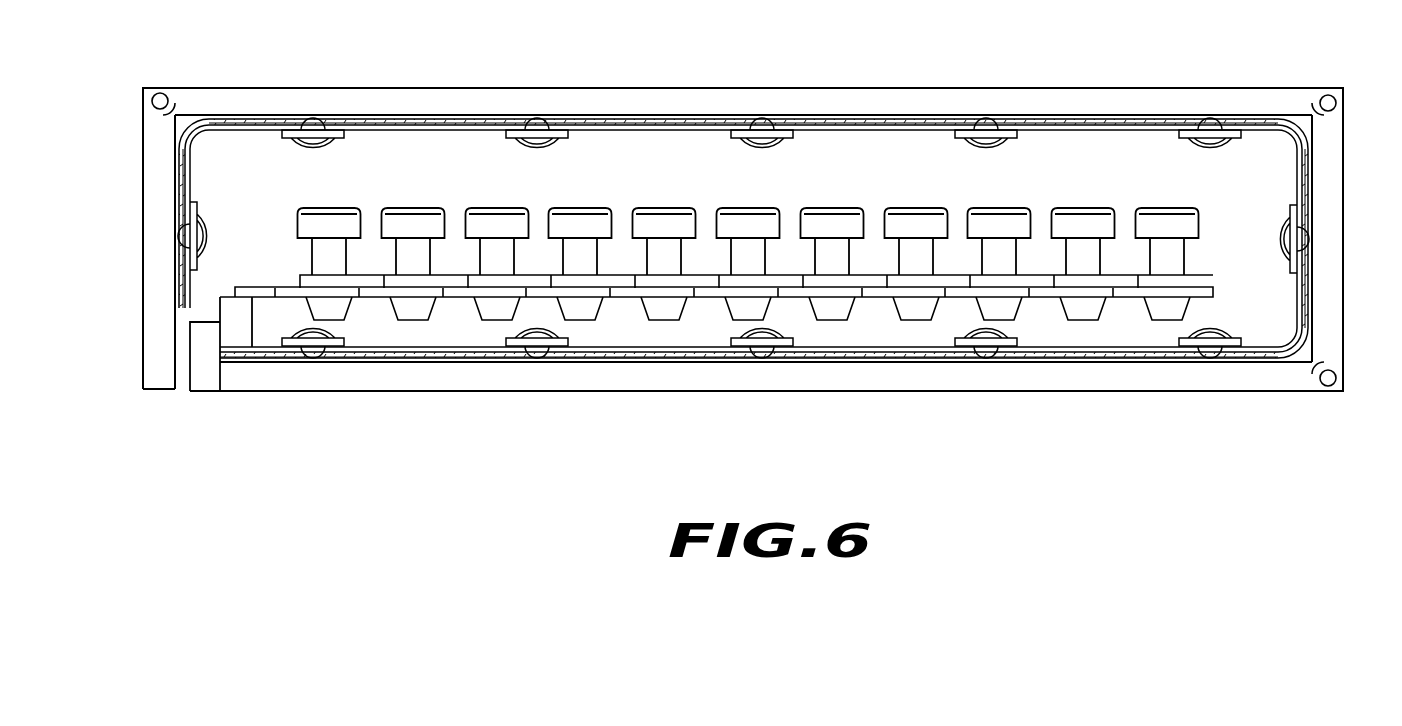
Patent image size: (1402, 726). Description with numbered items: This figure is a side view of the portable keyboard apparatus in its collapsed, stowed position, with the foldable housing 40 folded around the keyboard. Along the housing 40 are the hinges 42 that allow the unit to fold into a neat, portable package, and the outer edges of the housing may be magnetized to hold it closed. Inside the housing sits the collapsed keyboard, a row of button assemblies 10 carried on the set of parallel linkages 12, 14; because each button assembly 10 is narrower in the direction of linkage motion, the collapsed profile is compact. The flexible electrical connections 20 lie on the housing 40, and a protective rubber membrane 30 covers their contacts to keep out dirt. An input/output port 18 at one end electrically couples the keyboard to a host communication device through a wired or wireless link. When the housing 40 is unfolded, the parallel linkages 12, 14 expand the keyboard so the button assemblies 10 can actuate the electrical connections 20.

The button assemblies 10 is at (716, 233).
The parallel linkage 12 is at (250, 283).
The parallel linkage 14 is at (369, 275).
The input/output port 18 is at (203, 348).
The electrical connections 20 is at (199, 146).
The protective rubber membrane 30 is at (318, 148).
The foldable housing 40 is at (155, 297).
The hinges 42 is at (157, 90).